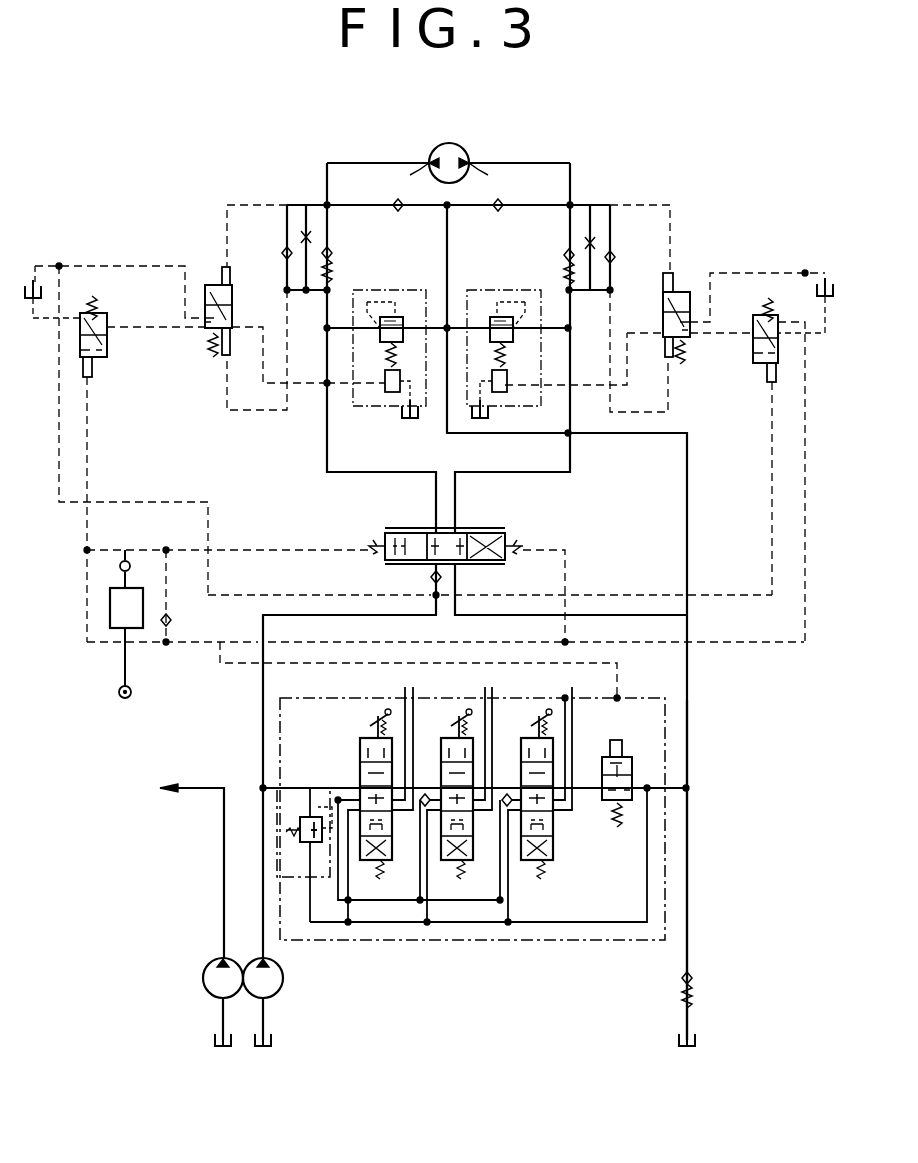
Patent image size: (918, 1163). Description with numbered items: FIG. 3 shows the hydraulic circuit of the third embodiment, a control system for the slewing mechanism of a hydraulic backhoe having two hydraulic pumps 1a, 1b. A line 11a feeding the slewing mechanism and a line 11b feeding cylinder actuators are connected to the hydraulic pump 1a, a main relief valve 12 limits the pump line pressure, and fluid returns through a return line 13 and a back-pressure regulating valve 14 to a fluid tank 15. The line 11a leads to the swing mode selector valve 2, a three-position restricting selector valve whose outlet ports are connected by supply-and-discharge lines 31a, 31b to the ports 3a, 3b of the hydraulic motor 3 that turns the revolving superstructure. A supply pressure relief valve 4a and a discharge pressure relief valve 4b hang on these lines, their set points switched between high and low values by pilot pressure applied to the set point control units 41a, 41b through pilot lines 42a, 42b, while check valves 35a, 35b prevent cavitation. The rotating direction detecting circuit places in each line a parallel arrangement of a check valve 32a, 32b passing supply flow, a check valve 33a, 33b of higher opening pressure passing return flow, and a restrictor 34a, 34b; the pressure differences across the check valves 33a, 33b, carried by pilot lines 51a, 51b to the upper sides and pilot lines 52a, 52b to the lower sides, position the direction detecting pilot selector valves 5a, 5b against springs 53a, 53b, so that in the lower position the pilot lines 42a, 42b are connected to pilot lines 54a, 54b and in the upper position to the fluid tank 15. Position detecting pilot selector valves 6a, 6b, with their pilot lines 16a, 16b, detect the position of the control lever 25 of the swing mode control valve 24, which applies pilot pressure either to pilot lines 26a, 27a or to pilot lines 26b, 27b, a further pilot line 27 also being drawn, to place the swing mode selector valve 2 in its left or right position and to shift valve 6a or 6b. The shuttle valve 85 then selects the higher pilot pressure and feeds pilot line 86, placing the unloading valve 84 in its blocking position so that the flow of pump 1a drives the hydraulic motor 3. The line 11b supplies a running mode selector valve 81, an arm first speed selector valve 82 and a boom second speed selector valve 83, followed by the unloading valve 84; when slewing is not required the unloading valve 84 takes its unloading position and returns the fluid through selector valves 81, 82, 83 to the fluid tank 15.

The hydraulic pump 1a is at (283, 990).
The hydraulic pump 1b is at (203, 990).
The swing mode selector valve 2 is at (505, 531).
The hydraulic motor 3 is at (452, 143).
The port of hydraulic motor 3a is at (404, 177).
The port of hydraulic motor 3b is at (493, 177).
The supply pressure relief valve 4a is at (403, 300).
The discharge pressure relief valve 4b is at (490, 300).
The direction detecting pilot selector valve 5a is at (226, 285).
The direction detecting pilot selector valve 5b is at (663, 290).
The position detecting pilot selector valve 6a is at (100, 312).
The position detecting pilot selector valve 6b is at (758, 312).
The line 11a is at (278, 718).
The line 11b is at (295, 790).
The main relief valve 12 is at (305, 845).
The return line 13 is at (687, 878).
The back-pressure regulating valve 14 is at (690, 975).
The fluid tank 15 is at (51, 307).
The pilot line 16a is at (60, 425).
The pilot line 16b is at (804, 518).
The swing mode control valve 24 is at (143, 588).
The control lever 25 is at (120, 548).
The pilot line 26a is at (280, 548).
The pilot line 26b is at (565, 572).
The pilot line 27 is at (190, 650).
The pilot line 27a is at (85, 510).
The pilot line 27b is at (800, 645).
The supply-and-discharge line 31a is at (327, 472).
The supply-and-discharge line 31b is at (570, 472).
The check valve 32a is at (282, 250).
The check valve 32b is at (615, 254).
The check valve 33a is at (332, 256).
The check valve 33b is at (565, 256).
The restrictor 34a is at (311, 237).
The restrictor 34b is at (585, 243).
The check valve 35a is at (398, 211).
The check valve 35b is at (498, 211).
The pilot chamber (set point control unit) 41a is at (388, 392).
The pilot chamber (set point control unit) 41b is at (498, 392).
The pilot line 42a is at (306, 395).
The pilot line 42b is at (608, 412).
The pilot line 51a is at (240, 200).
The pilot line 51b is at (640, 200).
The pilot line 52a is at (245, 412).
The pilot line 52b is at (670, 412).
The spring 53a is at (211, 352).
The spring 53b is at (683, 358).
The pilot line 54a is at (130, 330).
The pilot line 54b is at (718, 338).
The running mode selector valve 81 is at (368, 738).
The arm first speed selector valve 82 is at (450, 738).
The boom second speed selector valve 83 is at (530, 738).
The unloading valve 84 is at (628, 757).
The shuttle valve 85 is at (172, 620).
The pilot line 86 is at (622, 668).